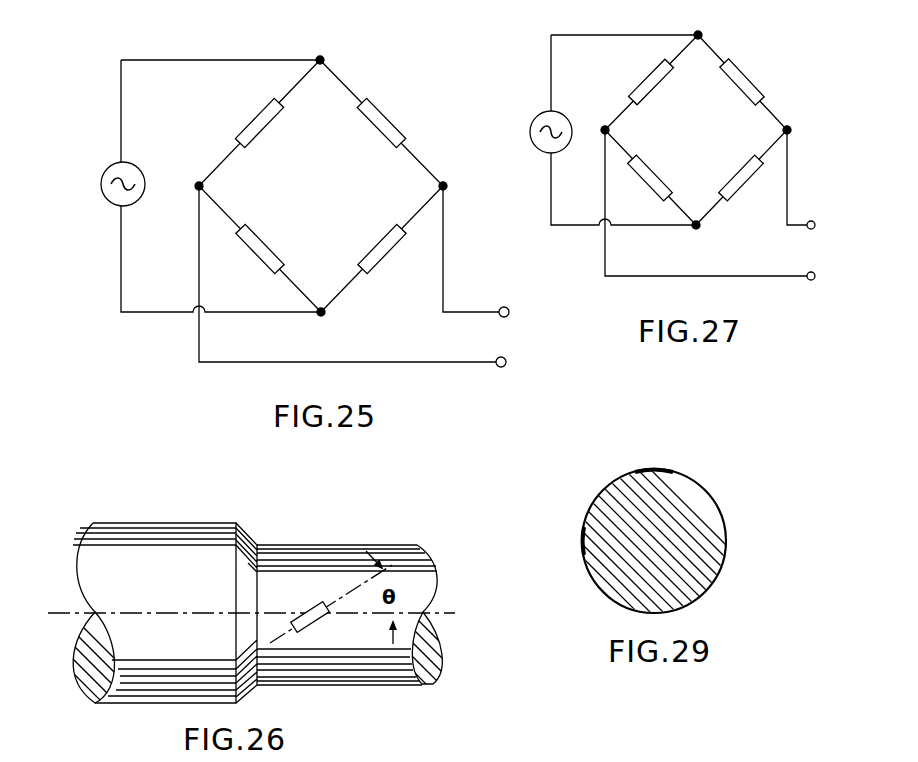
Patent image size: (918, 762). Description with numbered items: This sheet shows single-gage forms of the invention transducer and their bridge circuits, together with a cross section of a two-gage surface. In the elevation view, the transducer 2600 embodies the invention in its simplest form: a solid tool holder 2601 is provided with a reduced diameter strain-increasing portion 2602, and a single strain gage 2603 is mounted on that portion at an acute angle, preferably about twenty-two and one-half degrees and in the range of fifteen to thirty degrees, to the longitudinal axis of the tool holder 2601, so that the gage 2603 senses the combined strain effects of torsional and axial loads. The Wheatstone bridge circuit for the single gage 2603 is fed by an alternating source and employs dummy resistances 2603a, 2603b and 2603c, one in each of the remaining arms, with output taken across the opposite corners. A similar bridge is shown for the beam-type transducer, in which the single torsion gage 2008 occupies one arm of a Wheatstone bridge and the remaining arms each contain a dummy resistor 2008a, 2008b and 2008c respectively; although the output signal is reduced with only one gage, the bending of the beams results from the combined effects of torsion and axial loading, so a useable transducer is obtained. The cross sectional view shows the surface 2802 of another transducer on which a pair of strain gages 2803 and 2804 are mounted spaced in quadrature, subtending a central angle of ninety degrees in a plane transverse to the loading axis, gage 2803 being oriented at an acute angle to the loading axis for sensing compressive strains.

In FIG. 25, the single strain gage 2008 is at (250, 117).
In FIG. 25, the dummy resistor 2008a is at (374, 117).
In FIG. 25, the dummy resistor 2008b is at (378, 250).
In FIG. 25, the dummy resistor 2008c is at (258, 233).
In FIG. 27, the transducer 2600 is at (746, 61).
In FIG. 26, the transducer 2600 is at (297, 538).
In FIG. 26, the solid tool holder 2601 is at (153, 523).
In FIG. 26, the reduced diameter strain-increasing portion 2602 is at (352, 545).
In FIG. 27, the single strain gage 2603 is at (643, 80).
In FIG. 26, the single strain gage 2603 is at (306, 626).
In FIG. 27, the dummy resistance 2603a is at (722, 181).
In FIG. 27, the dummy resistance 2603b is at (648, 167).
In FIG. 27, the dummy resistance 2603c is at (746, 88).
In FIG. 29, the surface 2802 is at (692, 478).
In FIG. 29, the strain gage 2803 is at (582, 532).
In FIG. 29, the strain gage 2804 is at (643, 468).